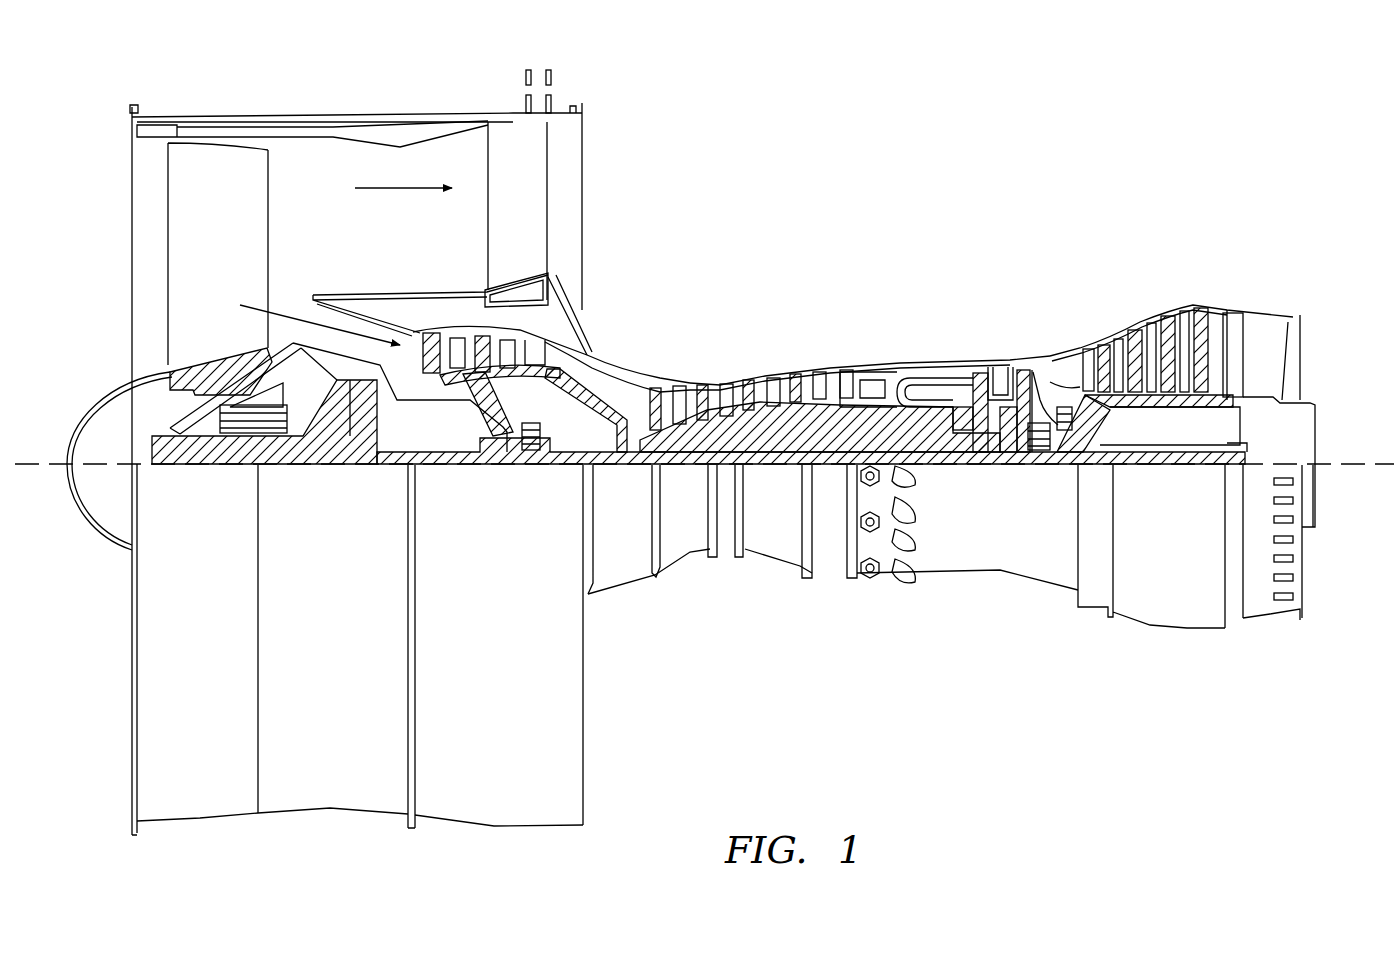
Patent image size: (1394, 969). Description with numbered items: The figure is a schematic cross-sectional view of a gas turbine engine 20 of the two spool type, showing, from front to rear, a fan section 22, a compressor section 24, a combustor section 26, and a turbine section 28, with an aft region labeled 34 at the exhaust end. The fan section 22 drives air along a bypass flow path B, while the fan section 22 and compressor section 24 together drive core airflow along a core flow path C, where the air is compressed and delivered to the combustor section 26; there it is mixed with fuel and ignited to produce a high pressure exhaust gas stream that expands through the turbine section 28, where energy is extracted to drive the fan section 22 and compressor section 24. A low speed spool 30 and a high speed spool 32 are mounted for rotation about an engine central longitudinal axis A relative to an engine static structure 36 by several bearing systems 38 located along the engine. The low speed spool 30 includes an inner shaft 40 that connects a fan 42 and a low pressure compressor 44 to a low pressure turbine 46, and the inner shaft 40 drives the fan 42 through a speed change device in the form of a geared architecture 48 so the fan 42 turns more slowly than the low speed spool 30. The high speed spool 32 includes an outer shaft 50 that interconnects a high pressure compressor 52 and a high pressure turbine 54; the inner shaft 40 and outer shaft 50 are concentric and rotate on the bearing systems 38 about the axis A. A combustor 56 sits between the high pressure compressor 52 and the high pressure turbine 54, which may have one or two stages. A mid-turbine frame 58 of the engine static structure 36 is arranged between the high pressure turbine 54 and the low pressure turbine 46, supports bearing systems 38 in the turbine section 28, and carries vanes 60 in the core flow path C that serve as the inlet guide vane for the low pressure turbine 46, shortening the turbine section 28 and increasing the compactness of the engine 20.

The gas turbine engine 20 is at (927, 198).
The fan section 22 is at (275, 108).
The compressor section 24 is at (635, 362).
The combustor section 26 is at (910, 352).
The turbine section 28 is at (1107, 298).
The low speed spool 30 is at (785, 470).
The high speed spool 32 is at (833, 415).
The exhaust nozzle section 34 is at (1187, 452).
The engine static structure 36 is at (832, 553).
The bearing systems 38 is at (275, 452).
The inner shaft 40 is at (615, 470).
The fan 42 is at (226, 240).
The low pressure compressor section 44 is at (535, 330).
The low pressure turbine section 46 is at (1157, 320).
The geared architecture 48 is at (365, 458).
The outer shaft 50 is at (945, 453).
The high pressure compressor section 52 is at (760, 375).
The high pressure turbine section 54 is at (1003, 362).
The combustor 56 is at (930, 382).
The mid-turbine frame 58 is at (1053, 350).
The vanes 60 is at (1100, 420).
The engine central longitudinal axis A is at (1373, 458).
The bypass flow path B is at (388, 189).
The core flow path C is at (309, 316).